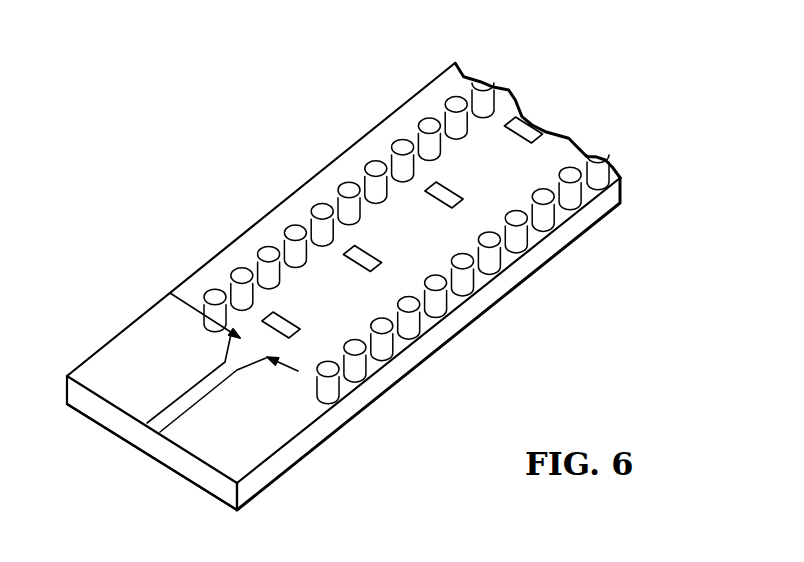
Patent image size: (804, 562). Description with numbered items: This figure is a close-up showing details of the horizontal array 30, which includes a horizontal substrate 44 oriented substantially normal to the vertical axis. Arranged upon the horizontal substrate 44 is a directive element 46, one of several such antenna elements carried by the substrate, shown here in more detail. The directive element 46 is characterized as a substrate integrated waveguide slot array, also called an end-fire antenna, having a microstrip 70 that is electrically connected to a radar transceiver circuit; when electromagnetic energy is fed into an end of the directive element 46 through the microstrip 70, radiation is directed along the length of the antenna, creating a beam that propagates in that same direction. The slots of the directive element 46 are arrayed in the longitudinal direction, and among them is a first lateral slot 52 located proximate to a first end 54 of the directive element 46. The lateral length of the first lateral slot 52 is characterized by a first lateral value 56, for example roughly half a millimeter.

The horizontal array 30 is at (327, 273).
The horizontal substrate 44 is at (355, 403).
The directive element 46 is at (377, 72).
The first lateral slot 52 is at (274, 311).
The first end 54 is at (140, 466).
The first lateral value 56 is at (253, 344).
The microstrip 70 is at (200, 401).